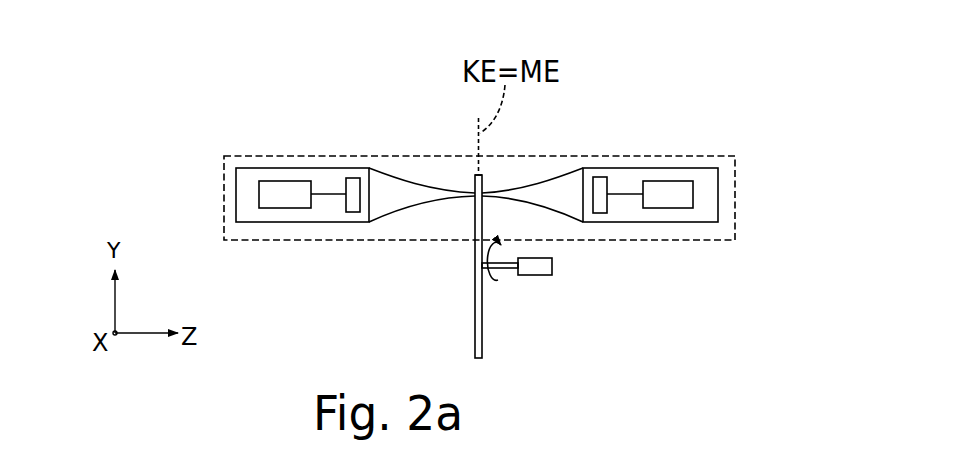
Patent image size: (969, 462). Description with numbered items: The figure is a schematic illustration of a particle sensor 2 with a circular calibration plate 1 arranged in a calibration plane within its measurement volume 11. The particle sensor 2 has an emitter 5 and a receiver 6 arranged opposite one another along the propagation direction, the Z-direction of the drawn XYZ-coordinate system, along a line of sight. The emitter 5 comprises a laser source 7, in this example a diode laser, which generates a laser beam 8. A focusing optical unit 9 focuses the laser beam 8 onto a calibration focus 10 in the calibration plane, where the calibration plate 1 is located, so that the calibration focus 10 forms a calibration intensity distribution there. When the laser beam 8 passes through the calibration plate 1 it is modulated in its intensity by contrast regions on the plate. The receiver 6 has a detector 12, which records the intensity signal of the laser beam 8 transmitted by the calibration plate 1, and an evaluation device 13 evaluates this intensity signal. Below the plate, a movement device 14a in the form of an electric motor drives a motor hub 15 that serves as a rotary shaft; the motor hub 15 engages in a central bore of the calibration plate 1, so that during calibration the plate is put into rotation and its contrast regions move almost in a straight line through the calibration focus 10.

The calibration plate 1 is at (467, 343).
The particle sensor 2 is at (749, 184).
The emitter 5 is at (320, 182).
The receiver 6 is at (707, 190).
The laser source 7 is at (275, 195).
The laser beam 8 is at (420, 185).
The focusing optical unit 9 is at (355, 180).
The calibration focus 10 is at (475, 192).
The measurement volume 11 is at (494, 181).
The detector 12 is at (600, 182).
The evaluation device 13 is at (683, 188).
The movement device 14a is at (537, 270).
The motor hub 15 is at (499, 268).